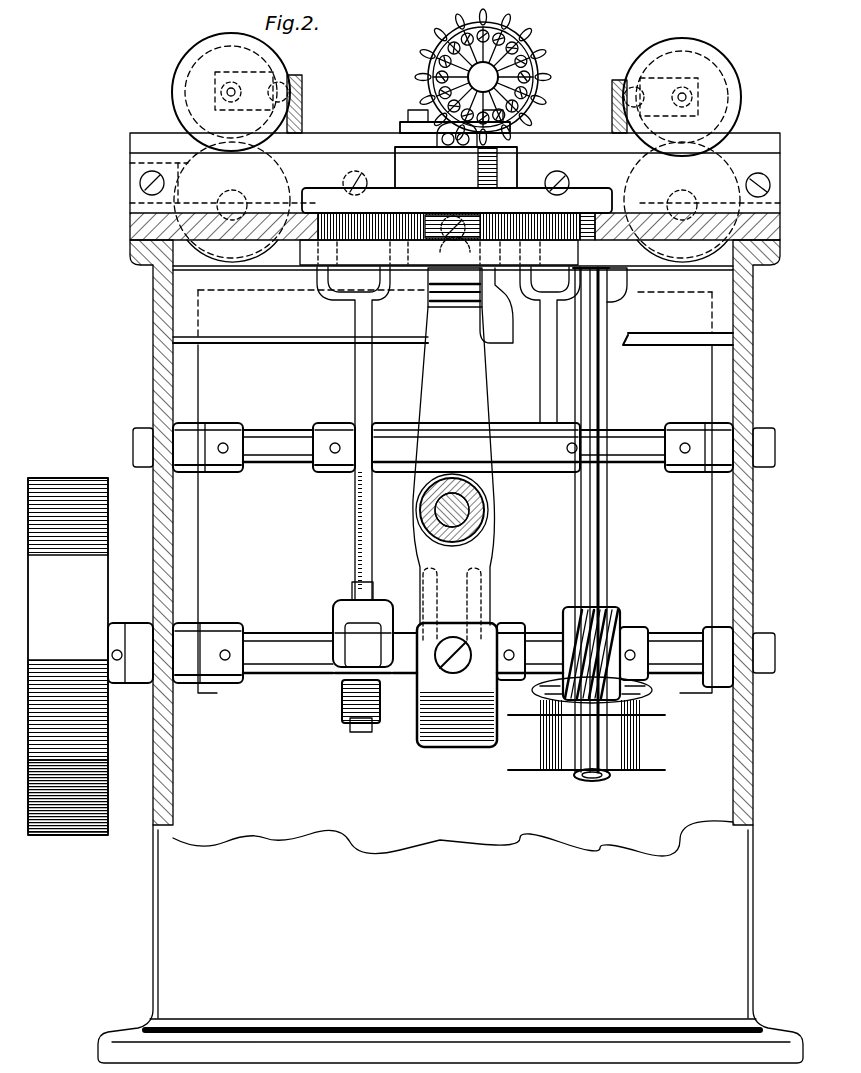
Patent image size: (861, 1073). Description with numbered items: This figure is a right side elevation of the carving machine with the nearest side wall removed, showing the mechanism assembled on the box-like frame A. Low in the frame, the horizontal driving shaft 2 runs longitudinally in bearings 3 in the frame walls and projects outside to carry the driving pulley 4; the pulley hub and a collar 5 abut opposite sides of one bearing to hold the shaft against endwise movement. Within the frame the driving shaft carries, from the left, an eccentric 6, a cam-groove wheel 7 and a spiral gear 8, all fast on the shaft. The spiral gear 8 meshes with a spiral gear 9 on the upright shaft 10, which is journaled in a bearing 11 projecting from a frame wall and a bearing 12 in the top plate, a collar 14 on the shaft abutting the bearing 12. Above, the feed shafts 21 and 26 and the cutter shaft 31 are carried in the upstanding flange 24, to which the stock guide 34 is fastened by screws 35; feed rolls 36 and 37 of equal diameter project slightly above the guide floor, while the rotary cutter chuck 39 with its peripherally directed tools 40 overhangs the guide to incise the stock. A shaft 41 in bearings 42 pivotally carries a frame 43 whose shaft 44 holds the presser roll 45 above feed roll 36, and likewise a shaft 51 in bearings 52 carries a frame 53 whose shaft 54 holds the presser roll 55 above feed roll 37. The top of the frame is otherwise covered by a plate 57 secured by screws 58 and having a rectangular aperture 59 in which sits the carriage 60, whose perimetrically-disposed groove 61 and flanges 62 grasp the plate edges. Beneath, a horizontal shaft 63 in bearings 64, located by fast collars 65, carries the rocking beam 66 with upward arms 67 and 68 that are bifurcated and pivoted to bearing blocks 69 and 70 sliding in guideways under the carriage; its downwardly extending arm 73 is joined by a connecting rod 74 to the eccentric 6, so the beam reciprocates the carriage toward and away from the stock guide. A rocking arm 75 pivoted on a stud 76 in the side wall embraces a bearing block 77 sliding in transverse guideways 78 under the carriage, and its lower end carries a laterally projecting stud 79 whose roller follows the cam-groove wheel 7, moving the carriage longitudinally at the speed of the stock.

The frame A is at (747, 548).
The driving shaft 2 is at (280, 677).
The bearings 3 is at (188, 685).
The driving pulley 4 is at (88, 592).
The collar 5 is at (217, 684).
The eccentric 6 is at (342, 710).
The cam-groove wheel 7 is at (432, 745).
The spiral gear 8 is at (618, 624).
The spiral gear 9 is at (550, 700).
The shaft 10 is at (590, 553).
The bearing 11 is at (620, 772).
The bearing 12 is at (620, 283).
The collar 14 is at (616, 305).
The shaft 21 is at (130, 203).
The upstanding flange 24 is at (133, 143).
The shaft 26 is at (764, 203).
The horizontal shaft 31 is at (483, 77).
The stock guide 34 is at (600, 169).
The screws 35 is at (347, 180).
The feed roll 36 is at (130, 165).
The feed roll 37 is at (720, 163).
The rotary cutter chuck 39 is at (538, 66).
The tools 40 is at (528, 100).
The shaft 41 is at (293, 90).
The bearings 42 is at (296, 110).
The frame 43 is at (246, 78).
The shaft 44 is at (183, 86).
The presser roll 45 is at (180, 103).
The shaft 51 is at (622, 80).
The bearings 52 is at (622, 117).
The frame 53 is at (682, 97).
The shaft 54 is at (692, 88).
The presser roll 55 is at (735, 90).
The plate 57 is at (260, 212).
The screws 58 is at (162, 211).
The rectangular aperture 59 is at (590, 213).
The carriage 60 is at (449, 214).
The perimetrically-disposed groove 61 is at (543, 213).
The flanges 62 is at (377, 198).
The horizontal shaft 63 is at (272, 455).
The bearings 64 is at (192, 474).
The fast collars 65 is at (226, 474).
The rocking beam 66 is at (507, 440).
The arm 67 is at (360, 388).
The arm 68 is at (547, 363).
The bearing block 69 is at (355, 270).
The bearing block 70 is at (543, 272).
The downwardly extending arm 73 is at (360, 532).
The connecting rod 74 is at (360, 648).
The rocking arm 75 is at (454, 466).
The stud 76 is at (468, 507).
The bearing block 77 is at (427, 268).
The guideways 78 is at (447, 213).
The laterally projecting stud 79 is at (462, 658).